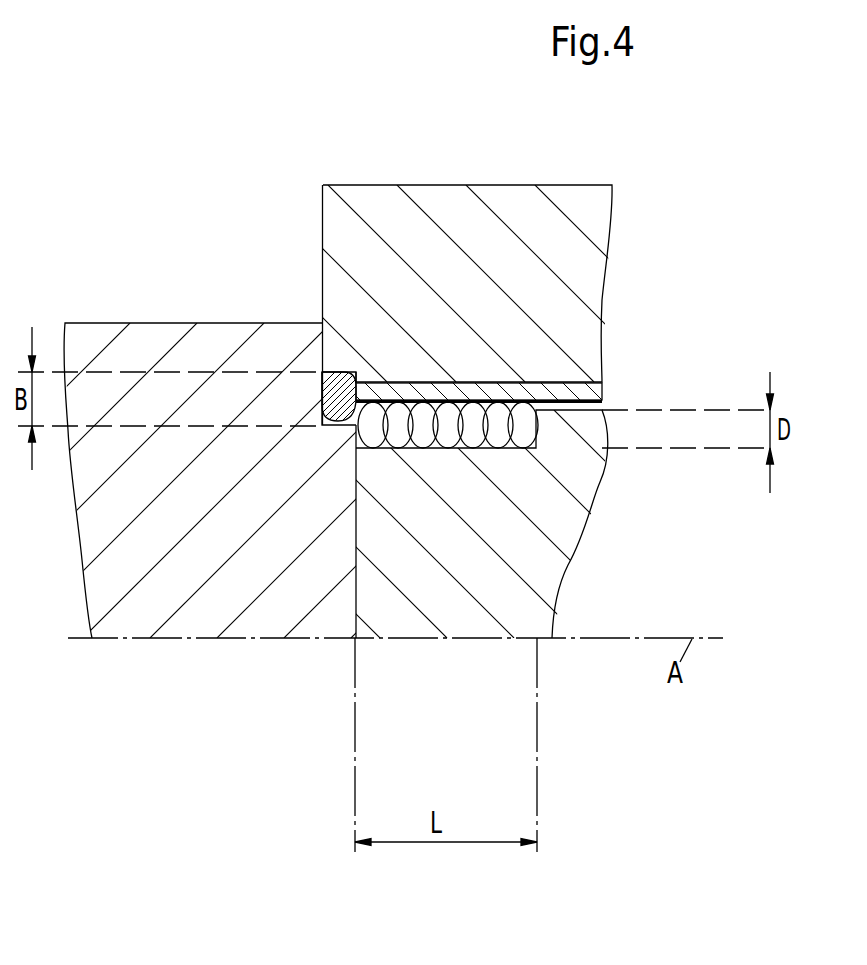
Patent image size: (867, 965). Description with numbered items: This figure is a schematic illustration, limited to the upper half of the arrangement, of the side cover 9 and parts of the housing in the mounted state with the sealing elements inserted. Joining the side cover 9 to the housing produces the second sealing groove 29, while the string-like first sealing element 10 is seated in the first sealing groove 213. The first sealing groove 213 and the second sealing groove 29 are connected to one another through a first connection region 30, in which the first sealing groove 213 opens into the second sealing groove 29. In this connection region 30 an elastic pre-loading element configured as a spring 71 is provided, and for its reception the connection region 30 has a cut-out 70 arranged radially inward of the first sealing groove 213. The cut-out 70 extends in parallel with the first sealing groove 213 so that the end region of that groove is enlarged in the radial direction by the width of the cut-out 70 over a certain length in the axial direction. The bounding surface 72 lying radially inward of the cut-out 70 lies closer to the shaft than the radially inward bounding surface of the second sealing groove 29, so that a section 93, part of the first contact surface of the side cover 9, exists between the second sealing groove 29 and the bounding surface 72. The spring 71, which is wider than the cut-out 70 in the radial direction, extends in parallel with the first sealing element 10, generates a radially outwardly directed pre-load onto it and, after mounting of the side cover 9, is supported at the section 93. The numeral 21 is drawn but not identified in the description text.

The side cover 9 is at (165, 322).
The first sealing element 10 is at (603, 381).
The valve body 21 is at (611, 221).
The second sealing groove 29 is at (322, 428).
The first connection region 30 is at (369, 366).
The cut-out 70 is at (370, 432).
The spring 71 is at (328, 382).
The bounding surface 72 is at (525, 440).
The section 93 is at (355, 433).
The first sealing groove 213 is at (597, 405).